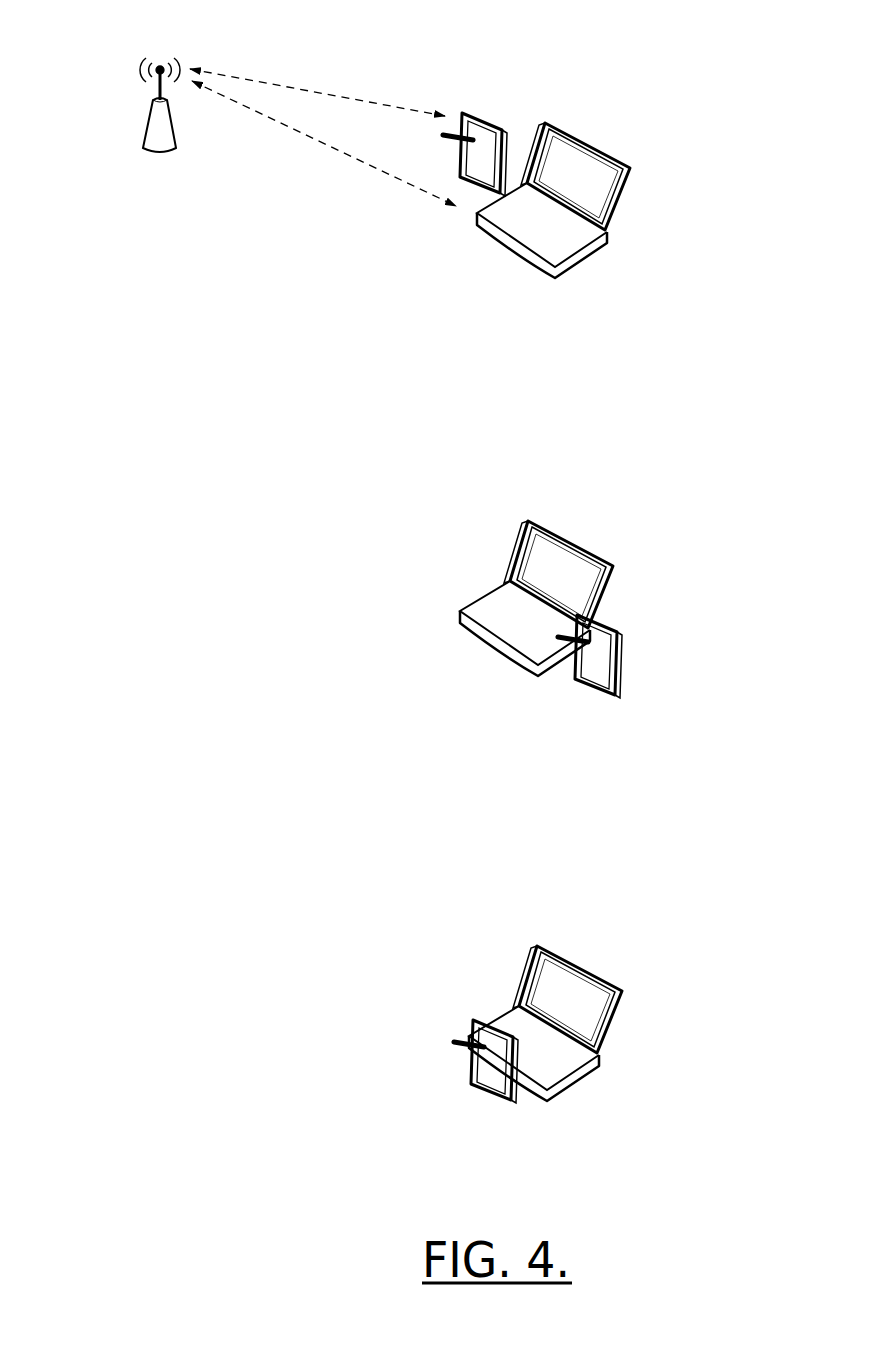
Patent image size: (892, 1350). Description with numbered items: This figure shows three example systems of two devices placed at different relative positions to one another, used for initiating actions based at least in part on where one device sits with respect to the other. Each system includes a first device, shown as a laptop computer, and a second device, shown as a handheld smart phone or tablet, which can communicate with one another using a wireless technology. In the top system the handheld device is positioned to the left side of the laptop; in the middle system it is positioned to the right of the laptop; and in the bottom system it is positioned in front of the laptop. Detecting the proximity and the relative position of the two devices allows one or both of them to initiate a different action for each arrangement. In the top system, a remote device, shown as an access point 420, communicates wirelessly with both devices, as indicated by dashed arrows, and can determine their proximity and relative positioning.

The access point 420 is at (148, 128).